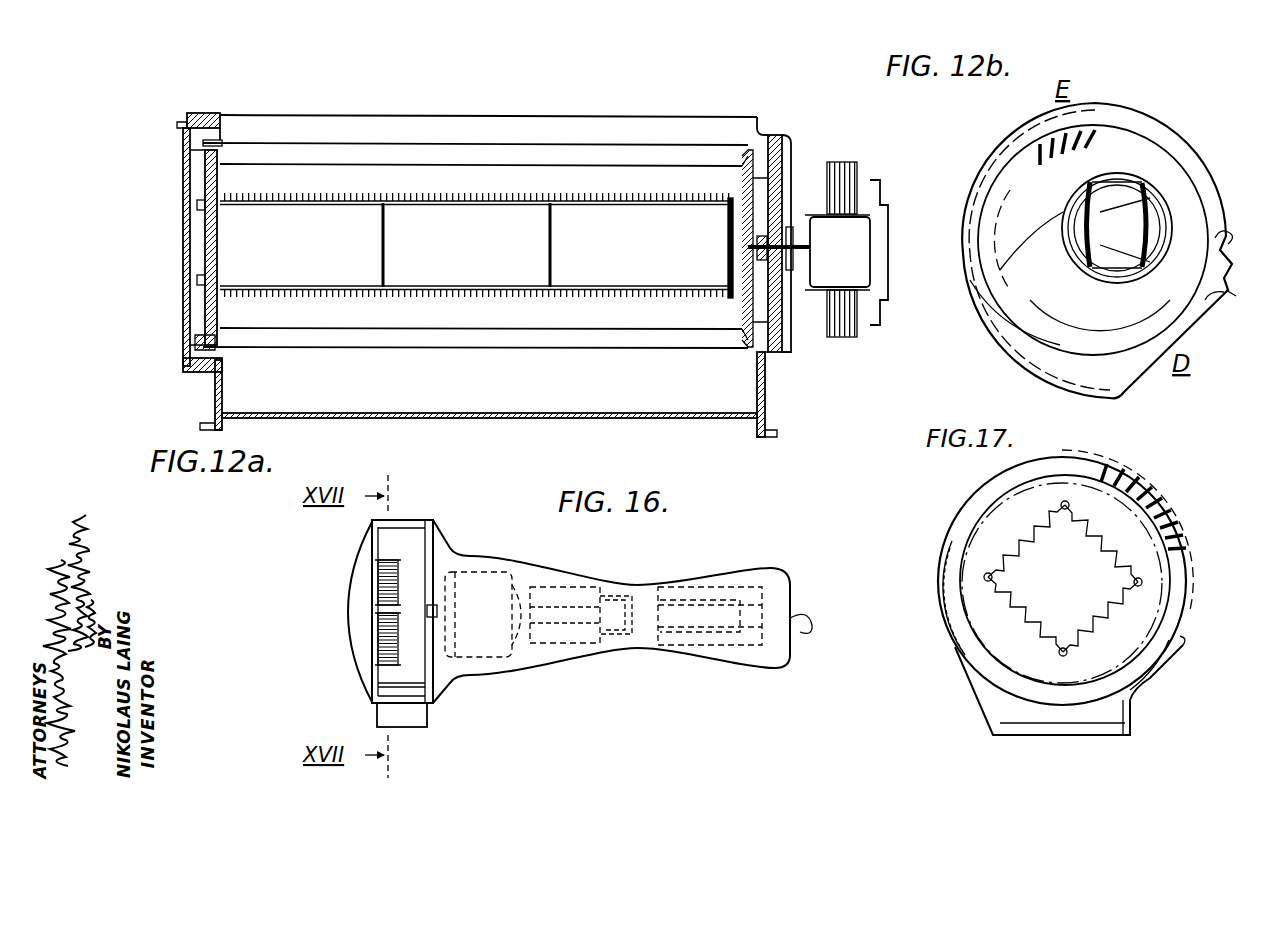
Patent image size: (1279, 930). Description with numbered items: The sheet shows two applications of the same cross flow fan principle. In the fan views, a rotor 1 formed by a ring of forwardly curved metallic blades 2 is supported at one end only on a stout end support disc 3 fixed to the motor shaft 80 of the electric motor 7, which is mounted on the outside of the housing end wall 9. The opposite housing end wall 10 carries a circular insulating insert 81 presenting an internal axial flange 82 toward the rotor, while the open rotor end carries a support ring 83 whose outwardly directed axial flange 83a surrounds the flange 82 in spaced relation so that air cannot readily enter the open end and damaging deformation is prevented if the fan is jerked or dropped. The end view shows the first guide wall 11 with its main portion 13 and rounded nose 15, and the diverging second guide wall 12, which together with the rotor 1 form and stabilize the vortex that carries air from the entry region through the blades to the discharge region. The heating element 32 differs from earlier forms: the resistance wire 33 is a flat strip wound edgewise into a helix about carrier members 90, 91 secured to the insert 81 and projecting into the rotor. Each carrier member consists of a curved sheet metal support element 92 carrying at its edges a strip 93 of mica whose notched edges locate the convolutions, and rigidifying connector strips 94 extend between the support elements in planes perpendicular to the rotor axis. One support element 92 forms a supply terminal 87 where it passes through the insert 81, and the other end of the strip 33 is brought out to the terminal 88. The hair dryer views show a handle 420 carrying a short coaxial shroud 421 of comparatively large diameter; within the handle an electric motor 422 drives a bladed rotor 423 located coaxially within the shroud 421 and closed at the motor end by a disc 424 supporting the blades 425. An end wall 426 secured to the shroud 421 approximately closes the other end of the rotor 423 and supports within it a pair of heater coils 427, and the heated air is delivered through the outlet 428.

In FIG. 12A, the rotor 1 is at (537, 134).
In FIG. 12B, the rotor 1 is at (1155, 112).
In FIG. 12A, the blades 2 is at (583, 126).
In FIG. 12B, the blades 2 is at (1048, 150).
In FIG. 12A, the end support disc 3 is at (791, 140).
In FIG. 12A, the electric motor 7 is at (628, 199).
In FIG. 12A, the housing end wall 9 is at (766, 392).
In FIG. 12A, the housing end wall 10 is at (214, 411).
In FIG. 12B, the first guide wall 11 is at (1232, 234).
In FIG. 12B, the second guide wall 12 is at (1030, 300).
In FIG. 12B, the main portion 13 is at (1224, 297).
In FIG. 12B, the rounded nose 15 is at (1234, 292).
In FIG. 12A, the heating element 32 is at (480, 193).
In FIG. 12B, the heating element 32 is at (1063, 212).
In FIG. 12A, the resistance wire 33 is at (422, 199).
In FIG. 12A, the motor shaft 80 is at (750, 247).
In FIG. 12A, the insulating insert 81 is at (190, 350).
In FIG. 12A, the internal axial flange 82 is at (183, 165).
In FIG. 12A, the support ring 83 is at (232, 150).
In FIG. 12A, the outwardly directed axial flange 83a is at (252, 110).
In FIG. 12A, the supply terminal 87 is at (204, 220).
In FIG. 12A, the supply terminal 88 is at (195, 340).
In FIG. 12A, the carrier member 90 is at (350, 222).
In FIG. 12B, the carrier member 90 is at (1062, 252).
In FIG. 12B, the carrier member 91 is at (1045, 170).
In FIG. 12B, the support element 92 is at (1135, 240).
In FIG. 12B, the insulator strip 93 is at (1030, 268).
In FIG. 12A, the connector strip 94 is at (385, 253).
In FIG. 12B, the connector strip 94 is at (1130, 295).
In FIG. 16, the handle 420 is at (598, 650).
In FIG. 16, the shroud 421 is at (434, 522).
In FIG. 17, the shroud 421 is at (944, 526).
In FIG. 16, the electric motor 422 is at (510, 655).
In FIG. 16, the bladed rotor 423 is at (405, 686).
In FIG. 17, the bladed rotor 423 is at (1180, 548).
In FIG. 16, the disc 424 is at (378, 597).
In FIG. 16, the blades 425 is at (430, 531).
In FIG. 16, the end wall 426 is at (378, 680).
In FIG. 16, the heater coils 427 is at (378, 574).
In FIG. 17, the heater coils 427 is at (1013, 548).
In FIG. 16, the outlet 428 is at (420, 716).
In FIG. 17, the outlet 428 is at (998, 704).